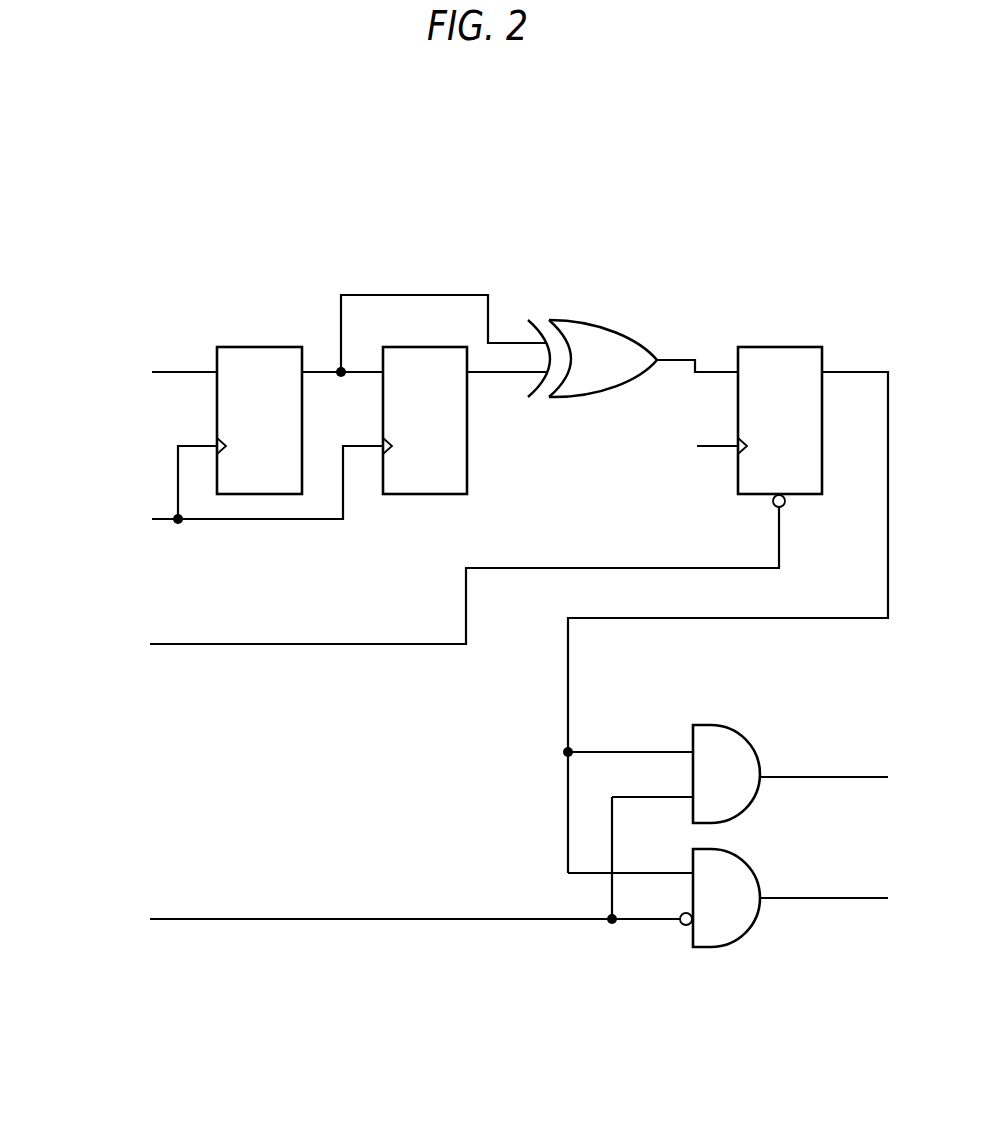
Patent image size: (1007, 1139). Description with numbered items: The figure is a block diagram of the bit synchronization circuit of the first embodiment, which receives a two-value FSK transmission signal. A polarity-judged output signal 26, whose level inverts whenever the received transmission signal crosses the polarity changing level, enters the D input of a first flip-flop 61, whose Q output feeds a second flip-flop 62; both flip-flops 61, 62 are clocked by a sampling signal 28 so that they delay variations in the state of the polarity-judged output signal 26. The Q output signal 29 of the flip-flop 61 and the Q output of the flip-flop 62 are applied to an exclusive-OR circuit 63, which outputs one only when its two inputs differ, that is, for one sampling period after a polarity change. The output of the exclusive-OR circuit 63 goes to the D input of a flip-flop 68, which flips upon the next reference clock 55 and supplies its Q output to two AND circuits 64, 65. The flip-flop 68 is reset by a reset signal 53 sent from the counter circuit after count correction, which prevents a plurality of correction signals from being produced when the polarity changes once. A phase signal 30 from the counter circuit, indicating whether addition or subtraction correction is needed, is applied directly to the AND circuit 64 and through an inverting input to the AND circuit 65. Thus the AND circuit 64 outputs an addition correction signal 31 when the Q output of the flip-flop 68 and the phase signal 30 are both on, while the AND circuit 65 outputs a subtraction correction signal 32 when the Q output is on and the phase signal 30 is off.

The polarity-judged output signal 26 is at (120, 342).
The sampling signal 28 is at (203, 504).
The Q output signal 29 is at (362, 295).
The phase signal 30 is at (361, 878).
The addition correction signal 31 is at (873, 774).
The subtraction correction signal 32 is at (873, 901).
The reset signal 53 is at (411, 597).
The reference clock 55 is at (624, 461).
The flip-flop 61 is at (250, 347).
The flip-flop 62 is at (416, 347).
The exclusive-OR circuit 63 is at (558, 316).
The AND circuit 64 is at (690, 733).
The AND circuit 65 is at (728, 851).
The flip-flop 68 is at (770, 347).